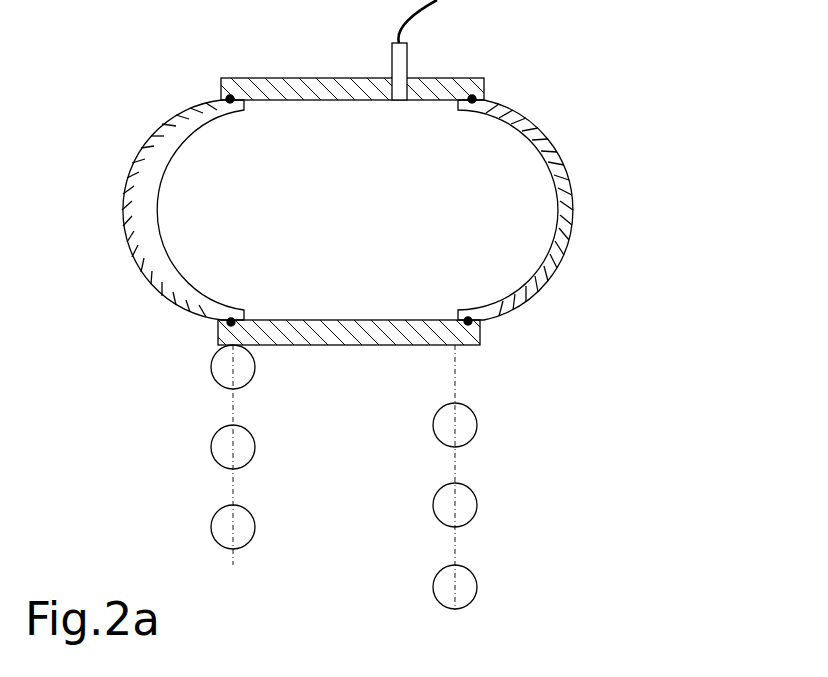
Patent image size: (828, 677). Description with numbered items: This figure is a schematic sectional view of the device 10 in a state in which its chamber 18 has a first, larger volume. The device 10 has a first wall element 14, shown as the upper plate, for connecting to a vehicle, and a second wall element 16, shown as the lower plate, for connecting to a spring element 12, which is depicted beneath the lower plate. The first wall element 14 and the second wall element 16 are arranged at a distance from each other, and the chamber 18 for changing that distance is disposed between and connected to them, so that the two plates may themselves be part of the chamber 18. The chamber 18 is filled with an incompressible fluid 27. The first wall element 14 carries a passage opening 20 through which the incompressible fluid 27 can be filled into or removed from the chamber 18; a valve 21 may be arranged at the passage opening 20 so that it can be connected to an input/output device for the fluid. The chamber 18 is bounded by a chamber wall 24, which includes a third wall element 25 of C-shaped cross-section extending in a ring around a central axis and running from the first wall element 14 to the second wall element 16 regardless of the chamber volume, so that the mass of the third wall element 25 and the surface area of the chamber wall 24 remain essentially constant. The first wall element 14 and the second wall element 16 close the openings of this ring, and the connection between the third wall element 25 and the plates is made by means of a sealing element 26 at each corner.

The device 10 is at (652, 128).
The spring element 12 is at (478, 505).
The first wall element 14 is at (250, 78).
The second wall element 16 is at (352, 345).
The chamber 18 is at (498, 253).
The passage opening 20 is at (400, 102).
The valve 21 is at (409, 56).
The chamber wall 24 is at (280, 100).
The third wall element 25 is at (155, 132).
The sealing element 26 is at (226, 97).
The incompressible fluid 27 is at (392, 245).